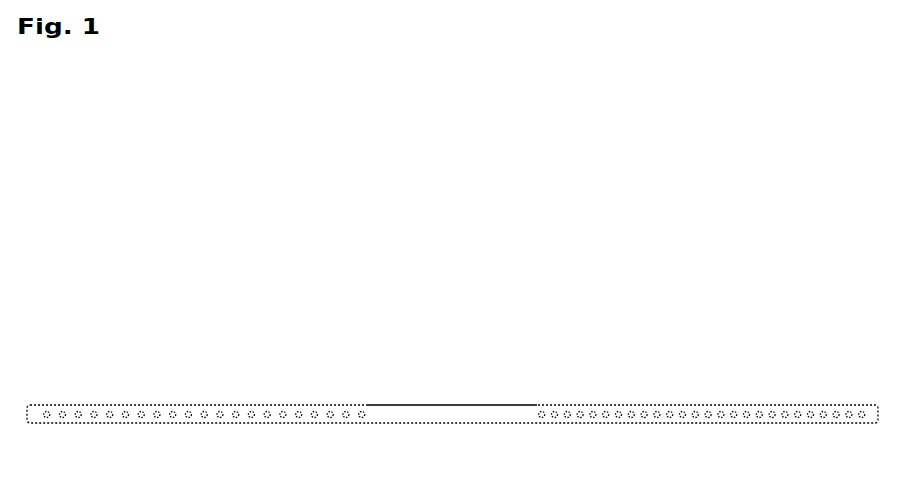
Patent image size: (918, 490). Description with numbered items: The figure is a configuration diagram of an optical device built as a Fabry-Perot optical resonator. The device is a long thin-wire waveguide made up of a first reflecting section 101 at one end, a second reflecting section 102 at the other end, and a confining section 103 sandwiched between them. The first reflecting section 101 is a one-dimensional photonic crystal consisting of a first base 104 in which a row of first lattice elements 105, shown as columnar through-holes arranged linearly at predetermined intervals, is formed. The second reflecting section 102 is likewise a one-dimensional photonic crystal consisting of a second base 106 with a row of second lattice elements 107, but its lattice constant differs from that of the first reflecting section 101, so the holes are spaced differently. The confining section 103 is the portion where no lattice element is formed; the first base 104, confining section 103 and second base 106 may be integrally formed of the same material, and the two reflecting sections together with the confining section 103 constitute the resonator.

The first reflecting section 101 is at (27, 404).
The second reflecting section 102 is at (878, 404).
The confining section 103 is at (368, 400).
The first base 104 is at (141, 418).
The first lattice element 105 is at (204, 418).
The second base 106 is at (660, 418).
The second lattice element 107 is at (721, 418).